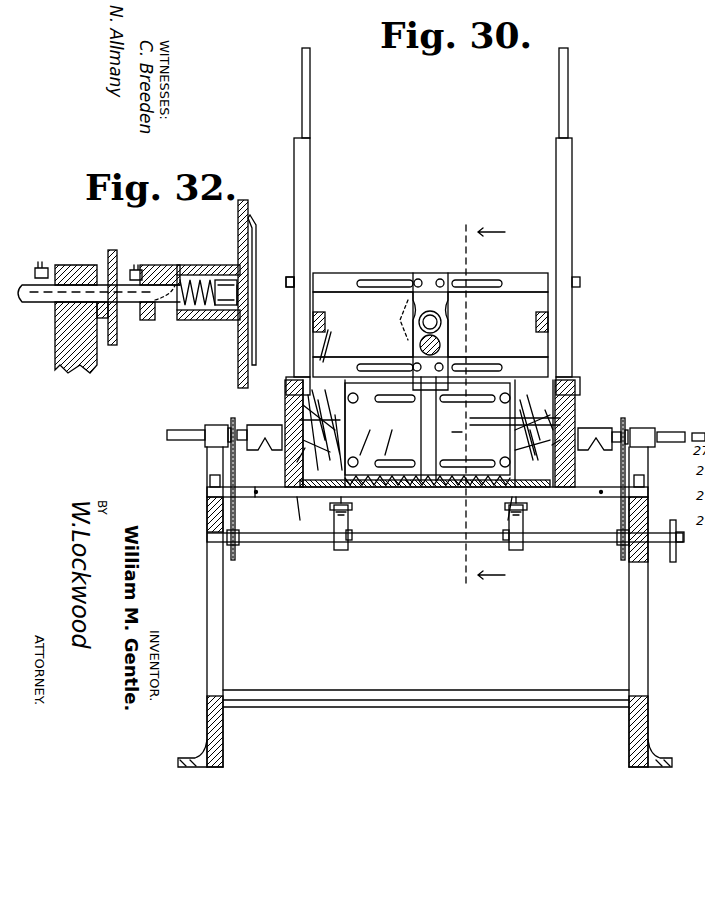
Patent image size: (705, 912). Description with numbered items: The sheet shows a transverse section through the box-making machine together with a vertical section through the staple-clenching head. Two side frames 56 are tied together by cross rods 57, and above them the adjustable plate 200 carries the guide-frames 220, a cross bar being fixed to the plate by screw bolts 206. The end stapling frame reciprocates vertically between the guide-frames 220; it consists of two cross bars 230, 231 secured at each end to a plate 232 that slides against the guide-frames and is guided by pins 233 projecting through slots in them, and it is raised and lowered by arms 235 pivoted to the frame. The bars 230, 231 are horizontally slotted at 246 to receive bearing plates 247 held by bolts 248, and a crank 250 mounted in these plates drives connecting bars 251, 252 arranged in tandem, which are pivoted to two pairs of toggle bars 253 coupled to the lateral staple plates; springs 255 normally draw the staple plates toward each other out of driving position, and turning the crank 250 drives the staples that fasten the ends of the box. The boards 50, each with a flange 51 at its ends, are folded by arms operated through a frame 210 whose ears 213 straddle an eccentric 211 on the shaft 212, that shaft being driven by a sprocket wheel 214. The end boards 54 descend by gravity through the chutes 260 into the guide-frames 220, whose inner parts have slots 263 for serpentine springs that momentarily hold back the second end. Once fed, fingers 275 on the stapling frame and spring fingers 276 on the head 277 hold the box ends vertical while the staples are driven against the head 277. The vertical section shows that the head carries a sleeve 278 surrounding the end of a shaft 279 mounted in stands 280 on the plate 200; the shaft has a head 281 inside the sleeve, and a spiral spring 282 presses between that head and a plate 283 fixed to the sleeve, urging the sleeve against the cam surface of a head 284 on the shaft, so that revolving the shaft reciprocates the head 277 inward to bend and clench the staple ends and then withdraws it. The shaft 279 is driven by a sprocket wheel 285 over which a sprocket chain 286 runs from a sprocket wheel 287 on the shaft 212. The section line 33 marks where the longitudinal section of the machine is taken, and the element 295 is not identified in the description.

In FIG. 30, the section line 33 is at (472, 405).
In FIG. 30, the board 50 is at (470, 395).
In FIG. 30, the flange 51 is at (434, 510).
In FIG. 30, the end board 54 is at (428, 437).
In FIG. 30, the side frame 56 is at (218, 625).
In FIG. 30, the cross rod 57 is at (444, 695).
In FIG. 30, the plate 200 is at (207, 492).
In FIG. 30, the screw bolt 206 is at (256, 494).
In FIG. 30, the frame 210 is at (352, 507).
In FIG. 30, the eccentric 211 is at (340, 550).
In FIG. 30, the shaft 212 is at (392, 543).
In FIG. 30, the ear 213 is at (332, 507).
In FIG. 30, the sprocket wheel 214 is at (673, 565).
In FIG. 30, the guide-frame 220 is at (298, 380).
In FIG. 32, the guide-frame 220 is at (280, 337).
In FIG. 30, the cross bar 230 is at (340, 281).
In FIG. 30, the cross bar 231 is at (472, 360).
In FIG. 30, the plate 232 is at (310, 270).
In FIG. 30, the pin 233 is at (286, 282).
In FIG. 32, the pin 233 is at (278, 274).
In FIG. 30, the arm 235 is at (342, 304).
In FIG. 32, the arm 235 is at (115, 345).
In FIG. 30, the slot 246 is at (485, 281).
In FIG. 30, the bearing plate 247 is at (425, 277).
In FIG. 30, the bolt 248 is at (408, 302).
In FIG. 30, the crank 250 is at (440, 328).
In FIG. 30, the connecting bar 251 is at (360, 420).
In FIG. 30, the connecting bar 252 is at (385, 460).
In FIG. 30, the toggle bar 253 is at (367, 460).
In FIG. 30, the spring 255 is at (412, 488).
In FIG. 30, the chute 260 is at (302, 105).
In FIG. 30, the slot 263 is at (455, 423).
In FIG. 30, the finger 275 is at (430, 412).
In FIG. 30, the spring finger 276 is at (295, 425).
In FIG. 32, the spring finger 276 is at (257, 290).
In FIG. 30, the head 277 is at (285, 393).
In FIG. 32, the head 277 is at (238, 345).
In FIG. 30, the sleeve 278 is at (300, 445).
In FIG. 32, the sleeve 278 is at (225, 318).
In FIG. 30, the shaft 279 is at (167, 435).
In FIG. 32, the shaft 279 is at (45, 300).
In FIG. 30, the stand 280 is at (207, 455).
In FIG. 32, the stand 280 is at (68, 362).
In FIG. 32, the head 281 is at (212, 280).
In FIG. 32, the spiral spring 282 is at (200, 275).
In FIG. 32, the plate 283 is at (175, 310).
In FIG. 30, the head 284 is at (260, 425).
In FIG. 32, the head 284 is at (150, 265).
In FIG. 30, the sprocket wheel 285 is at (231, 422).
In FIG. 30, the sprocket chain 286 is at (229, 518).
In FIG. 30, the sprocket wheel 287 is at (237, 548).
In FIG. 30, the lever 295 is at (325, 352).